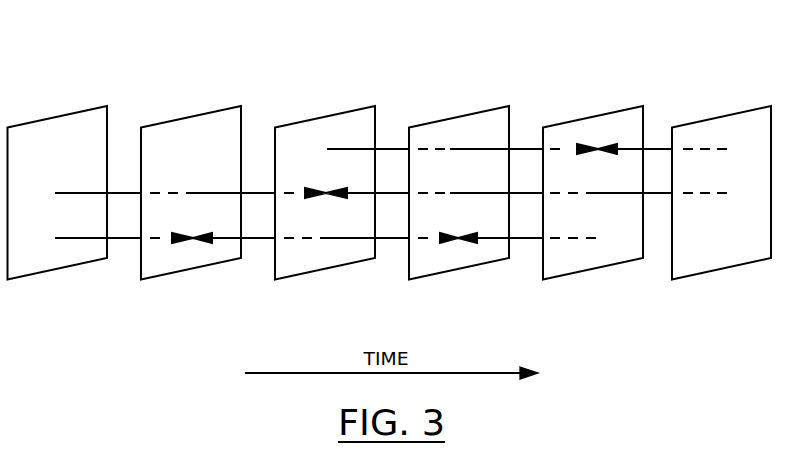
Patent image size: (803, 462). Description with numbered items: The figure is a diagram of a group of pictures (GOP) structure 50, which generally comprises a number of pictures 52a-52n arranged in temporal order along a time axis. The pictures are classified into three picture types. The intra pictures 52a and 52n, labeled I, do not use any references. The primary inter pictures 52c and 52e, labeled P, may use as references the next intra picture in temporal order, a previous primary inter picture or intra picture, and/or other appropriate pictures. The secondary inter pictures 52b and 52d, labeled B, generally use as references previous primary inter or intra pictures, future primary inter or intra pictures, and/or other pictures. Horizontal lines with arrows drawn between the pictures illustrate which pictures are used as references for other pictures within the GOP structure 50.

The group of pictures (GOP) structure 50 is at (110, 33).
The intra picture 52a is at (77, 111).
The secondary inter picture 52b is at (211, 111).
The primary inter picture 52c is at (344, 111).
The secondary inter picture 52d is at (475, 111).
The primary inter picture 52e is at (610, 111).
The intra picture 52n is at (739, 111).